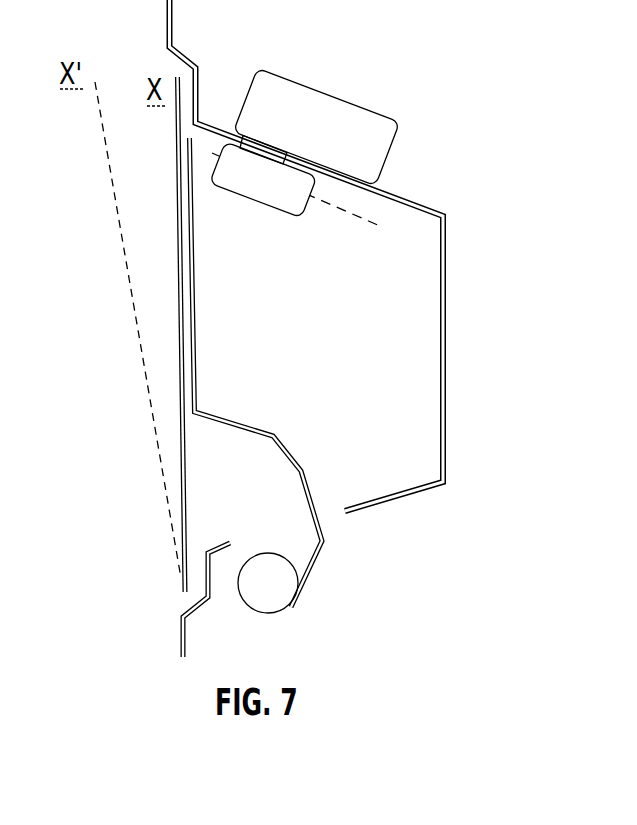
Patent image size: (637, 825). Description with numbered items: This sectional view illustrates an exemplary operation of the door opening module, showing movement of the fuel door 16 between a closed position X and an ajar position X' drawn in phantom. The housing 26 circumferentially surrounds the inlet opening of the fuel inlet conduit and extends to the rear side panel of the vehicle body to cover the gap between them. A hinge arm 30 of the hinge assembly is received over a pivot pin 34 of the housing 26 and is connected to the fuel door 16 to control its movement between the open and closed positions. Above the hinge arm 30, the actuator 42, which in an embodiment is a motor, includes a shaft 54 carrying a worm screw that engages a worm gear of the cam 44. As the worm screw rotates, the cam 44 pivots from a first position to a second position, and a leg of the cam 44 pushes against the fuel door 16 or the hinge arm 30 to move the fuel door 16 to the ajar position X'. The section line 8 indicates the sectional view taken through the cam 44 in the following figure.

The section line 8- 8 is at (201, 154).
The fuel door 16 is at (177, 178).
The housing 26 is at (459, 345).
The hinge arm 30 is at (267, 430).
The pivot pin 34 is at (268, 582).
The actuator 42 is at (353, 117).
The cam 44 is at (267, 190).
The shaft 54 is at (262, 147).